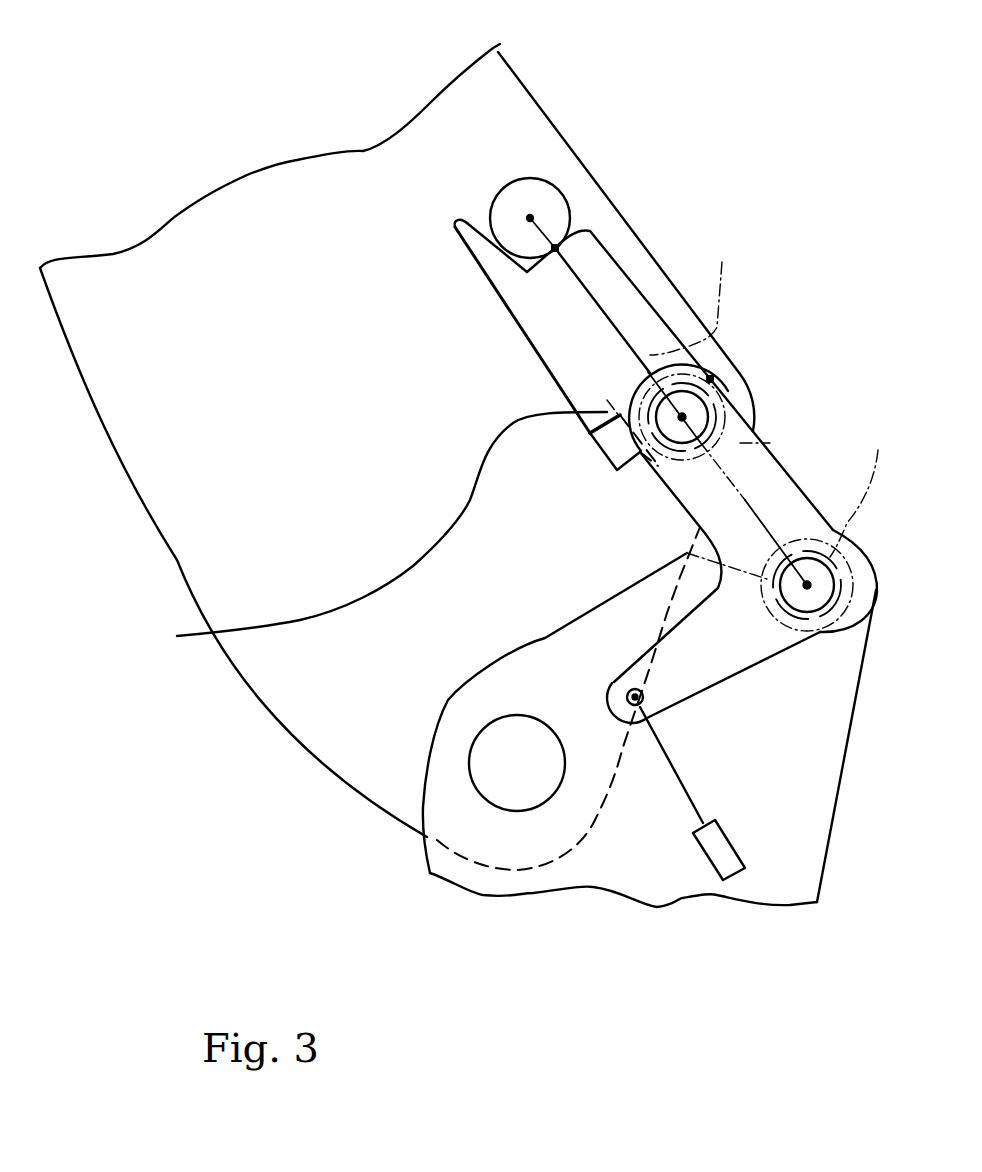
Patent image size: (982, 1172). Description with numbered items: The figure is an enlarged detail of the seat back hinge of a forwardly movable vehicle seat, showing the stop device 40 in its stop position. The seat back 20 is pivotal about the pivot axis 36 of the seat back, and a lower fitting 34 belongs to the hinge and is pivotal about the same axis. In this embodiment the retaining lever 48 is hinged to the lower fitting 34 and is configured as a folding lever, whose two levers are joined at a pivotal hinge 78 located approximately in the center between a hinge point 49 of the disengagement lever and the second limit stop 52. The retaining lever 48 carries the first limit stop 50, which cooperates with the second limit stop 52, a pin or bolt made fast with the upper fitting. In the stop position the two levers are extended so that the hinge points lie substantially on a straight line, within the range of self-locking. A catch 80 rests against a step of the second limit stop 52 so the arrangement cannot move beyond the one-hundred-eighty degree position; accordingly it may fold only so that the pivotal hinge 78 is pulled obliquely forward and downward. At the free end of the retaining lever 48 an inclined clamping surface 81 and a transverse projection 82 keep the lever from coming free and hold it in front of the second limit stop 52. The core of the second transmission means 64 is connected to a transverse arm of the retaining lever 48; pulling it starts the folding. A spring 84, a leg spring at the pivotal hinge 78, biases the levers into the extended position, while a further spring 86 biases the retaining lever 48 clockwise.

The seat back 20 is at (203, 477).
The lower fitting 34 is at (797, 772).
The pivot axis 36 is at (490, 773).
The stop device 40 is at (717, 194).
The retaining lever 48 is at (767, 480).
The hinge point 49 is at (807, 585).
The first limit stop 50 is at (593, 267).
The second limit stop 52 is at (523, 190).
The second transmission means 64 is at (673, 777).
The pivotal hinge 78 is at (712, 380).
The catch 80 is at (397, 442).
The inclined clamping surface 81 is at (527, 272).
The projection 82 is at (466, 237).
The spring 84 is at (696, 293).
The further spring 86 is at (863, 486).